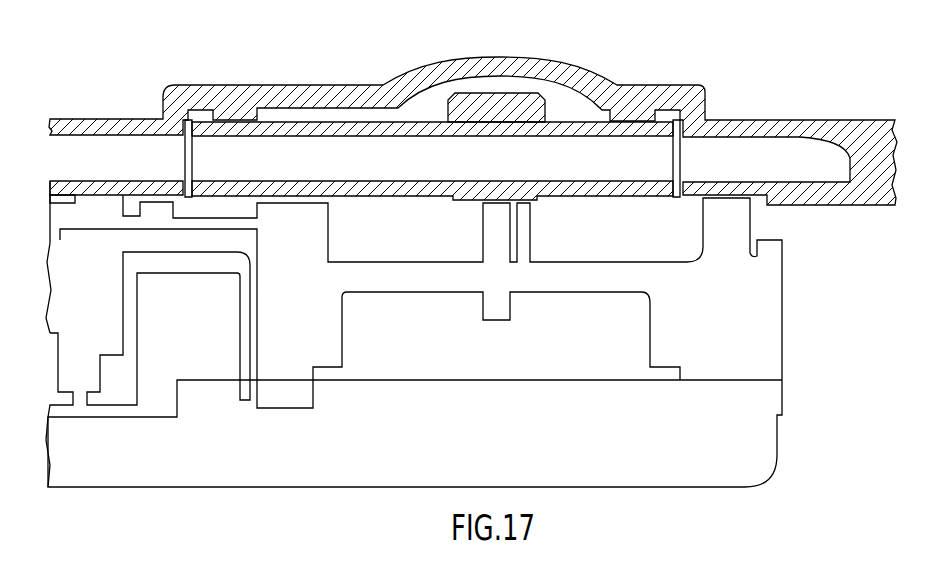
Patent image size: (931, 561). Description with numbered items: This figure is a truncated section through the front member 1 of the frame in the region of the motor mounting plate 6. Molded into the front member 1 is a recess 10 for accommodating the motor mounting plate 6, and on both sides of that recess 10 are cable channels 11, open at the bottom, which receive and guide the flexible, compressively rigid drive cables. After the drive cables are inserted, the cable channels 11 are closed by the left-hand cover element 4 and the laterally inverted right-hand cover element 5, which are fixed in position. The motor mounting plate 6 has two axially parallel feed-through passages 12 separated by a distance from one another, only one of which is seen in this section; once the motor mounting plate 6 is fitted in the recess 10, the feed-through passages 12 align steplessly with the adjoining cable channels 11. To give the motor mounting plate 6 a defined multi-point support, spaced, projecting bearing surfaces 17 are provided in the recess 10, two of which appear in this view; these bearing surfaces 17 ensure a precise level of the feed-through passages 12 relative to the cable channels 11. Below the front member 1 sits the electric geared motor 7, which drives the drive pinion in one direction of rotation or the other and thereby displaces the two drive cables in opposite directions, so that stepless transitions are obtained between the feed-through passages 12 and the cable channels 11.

The front member 1 is at (190, 78).
The left-hand cover element 4 is at (842, 205).
The right-hand cover element 5 is at (50, 188).
The motor mounting plate 6 is at (562, 106).
The electric geared motor 7 is at (795, 307).
The recess 10 is at (425, 117).
The cable channels 11 is at (97, 152).
The feed-through passages 12 is at (432, 160).
The bearing surfaces 17 is at (237, 122).